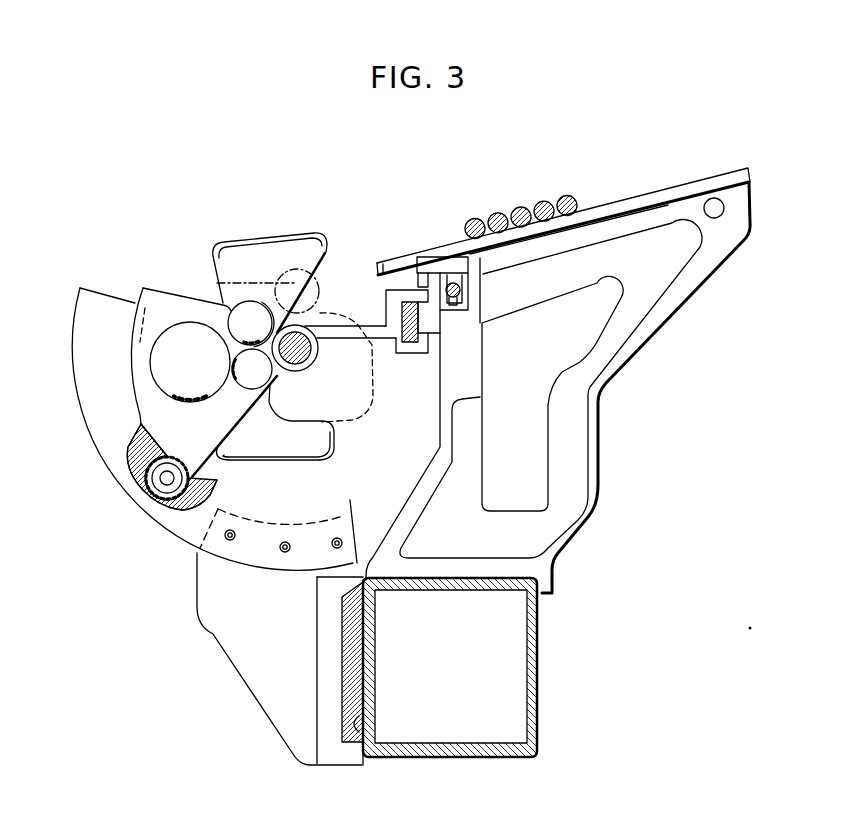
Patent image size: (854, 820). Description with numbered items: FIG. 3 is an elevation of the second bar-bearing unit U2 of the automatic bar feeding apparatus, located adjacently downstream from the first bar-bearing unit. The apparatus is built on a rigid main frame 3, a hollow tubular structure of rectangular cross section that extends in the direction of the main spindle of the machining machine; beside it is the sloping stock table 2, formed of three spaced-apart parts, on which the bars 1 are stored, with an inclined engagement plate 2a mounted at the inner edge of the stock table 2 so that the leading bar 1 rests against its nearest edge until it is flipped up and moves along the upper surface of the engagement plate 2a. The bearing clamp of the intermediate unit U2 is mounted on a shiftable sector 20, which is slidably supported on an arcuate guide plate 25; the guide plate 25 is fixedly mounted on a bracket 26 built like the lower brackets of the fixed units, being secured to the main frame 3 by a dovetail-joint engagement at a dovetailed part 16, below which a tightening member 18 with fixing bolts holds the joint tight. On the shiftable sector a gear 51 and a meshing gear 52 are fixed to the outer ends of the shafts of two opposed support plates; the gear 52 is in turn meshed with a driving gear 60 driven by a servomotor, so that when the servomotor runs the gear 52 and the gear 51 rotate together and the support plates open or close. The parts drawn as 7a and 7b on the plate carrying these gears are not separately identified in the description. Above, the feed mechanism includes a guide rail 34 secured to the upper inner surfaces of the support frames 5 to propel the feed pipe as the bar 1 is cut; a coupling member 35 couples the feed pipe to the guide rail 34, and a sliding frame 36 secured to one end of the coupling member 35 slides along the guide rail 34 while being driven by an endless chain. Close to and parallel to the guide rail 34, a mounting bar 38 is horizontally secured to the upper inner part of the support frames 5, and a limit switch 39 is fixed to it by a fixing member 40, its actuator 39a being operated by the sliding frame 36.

The bar 1 is at (305, 352).
The stock table 2 is at (706, 178).
The inclined engagement plate 2a is at (417, 250).
The main frame 3 is at (533, 658).
The support frames 5 is at (617, 338).
The upper lobe of plate 7a is at (282, 247).
The lower lobe of plate 7b is at (300, 444).
The dovetailed part 16 is at (355, 658).
The tightening member 18 is at (352, 727).
The shiftable sector 20 is at (162, 290).
The arcuate guide plate 25 is at (97, 437).
The bracket 26 is at (247, 673).
The guide rail 34 is at (407, 347).
The coupling member 35 is at (383, 323).
The sliding frame 36 is at (398, 355).
The mounting bar 38 is at (462, 307).
The limit switch 39 is at (460, 254).
The actuator 39a is at (415, 277).
The fixing member 40 is at (467, 274).
The gear 51 is at (243, 312).
The gear 52 is at (238, 385).
The driving gear 60 is at (165, 362).
The bearing unit U2 is at (128, 573).